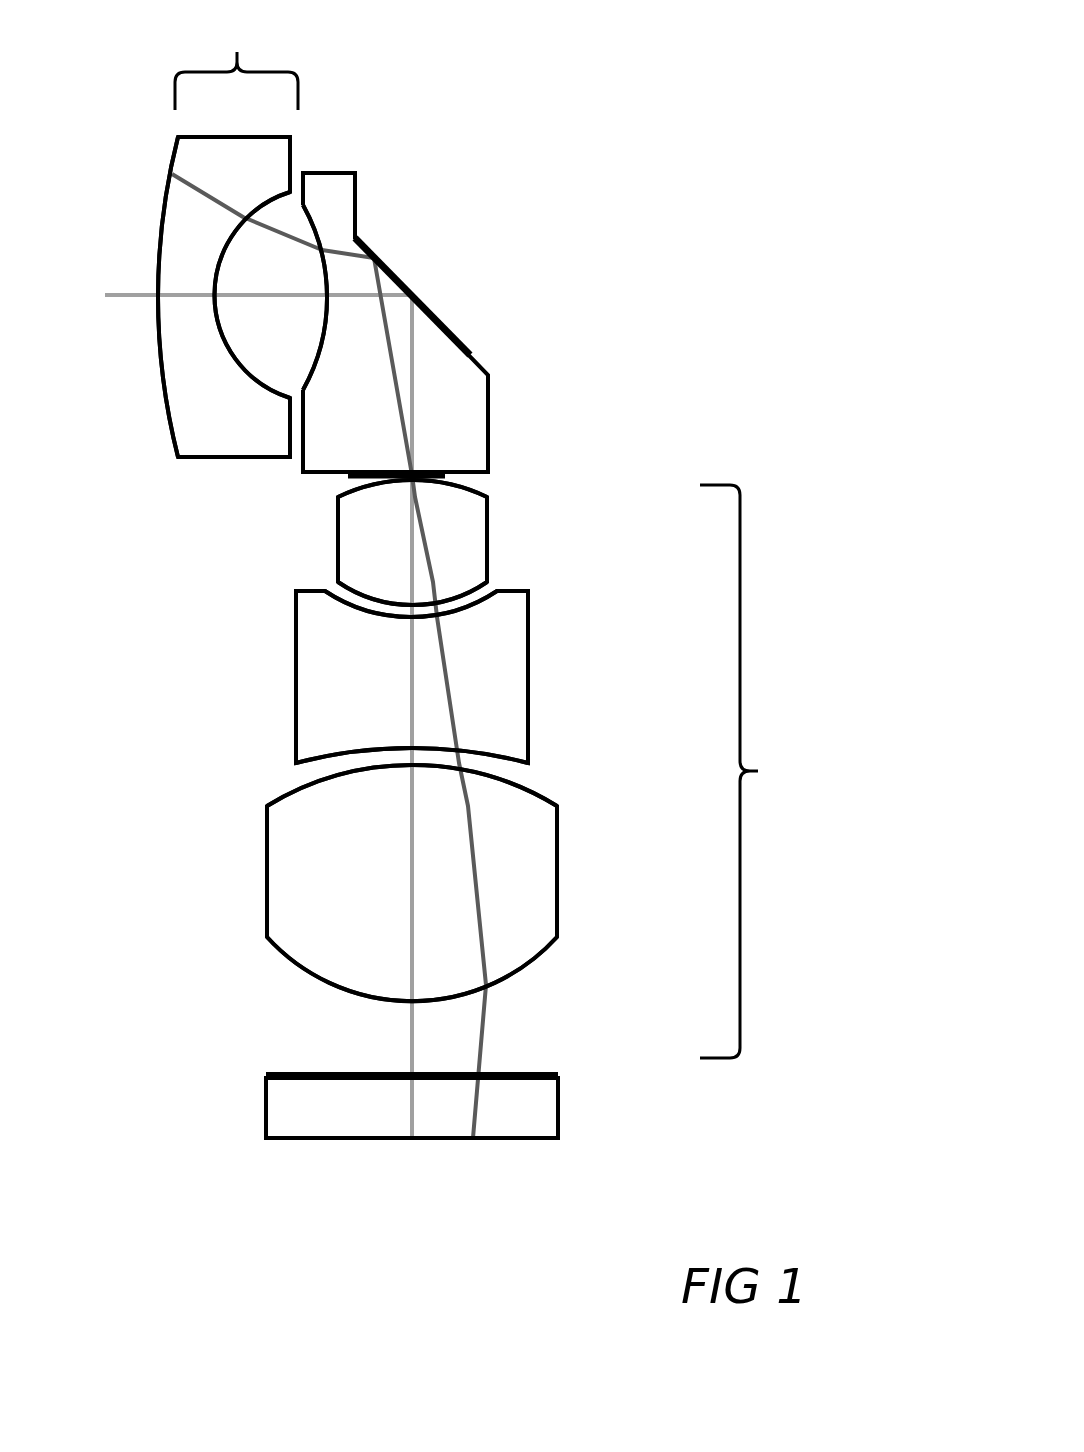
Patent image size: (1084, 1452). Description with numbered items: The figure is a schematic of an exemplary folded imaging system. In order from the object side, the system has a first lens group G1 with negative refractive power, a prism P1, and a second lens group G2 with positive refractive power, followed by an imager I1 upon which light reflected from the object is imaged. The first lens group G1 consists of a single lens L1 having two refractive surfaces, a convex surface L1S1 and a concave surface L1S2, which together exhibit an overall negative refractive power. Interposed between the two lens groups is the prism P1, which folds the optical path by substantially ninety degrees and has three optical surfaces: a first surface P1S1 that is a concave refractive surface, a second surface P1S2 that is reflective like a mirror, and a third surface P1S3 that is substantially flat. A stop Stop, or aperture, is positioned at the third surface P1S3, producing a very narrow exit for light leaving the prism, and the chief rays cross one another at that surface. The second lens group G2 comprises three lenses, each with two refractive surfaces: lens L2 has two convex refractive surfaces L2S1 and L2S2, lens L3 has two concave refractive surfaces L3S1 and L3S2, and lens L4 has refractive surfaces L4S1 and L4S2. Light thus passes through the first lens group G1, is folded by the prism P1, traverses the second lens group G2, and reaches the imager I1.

The first lens group G1 is at (236, 68).
The lens L1 is at (224, 297).
The convex surface L1S1 is at (151, 297).
The concave surface L1S2 is at (252, 295).
The prism P1 is at (395, 322).
The first surface P1S1 is at (334, 297).
The second surface P1S2 is at (449, 296).
The third surface P1S3 is at (395, 460).
The stop Stop is at (396, 461).
The lens L2 is at (412, 542).
The convex refractive surface L2S1 is at (412, 497).
The convex refractive surface L2S2 is at (412, 588).
The lens L3 is at (412, 677).
The concave refractive surface L3S1 is at (411, 612).
The concave refractive surface L3S2 is at (412, 746).
The lens L4 is at (412, 883).
The refractive surface L4S1 is at (412, 785).
The refractive surface L4S2 is at (412, 969).
The imager I1 is at (490, 1106).
The second lens group G2 is at (761, 771).